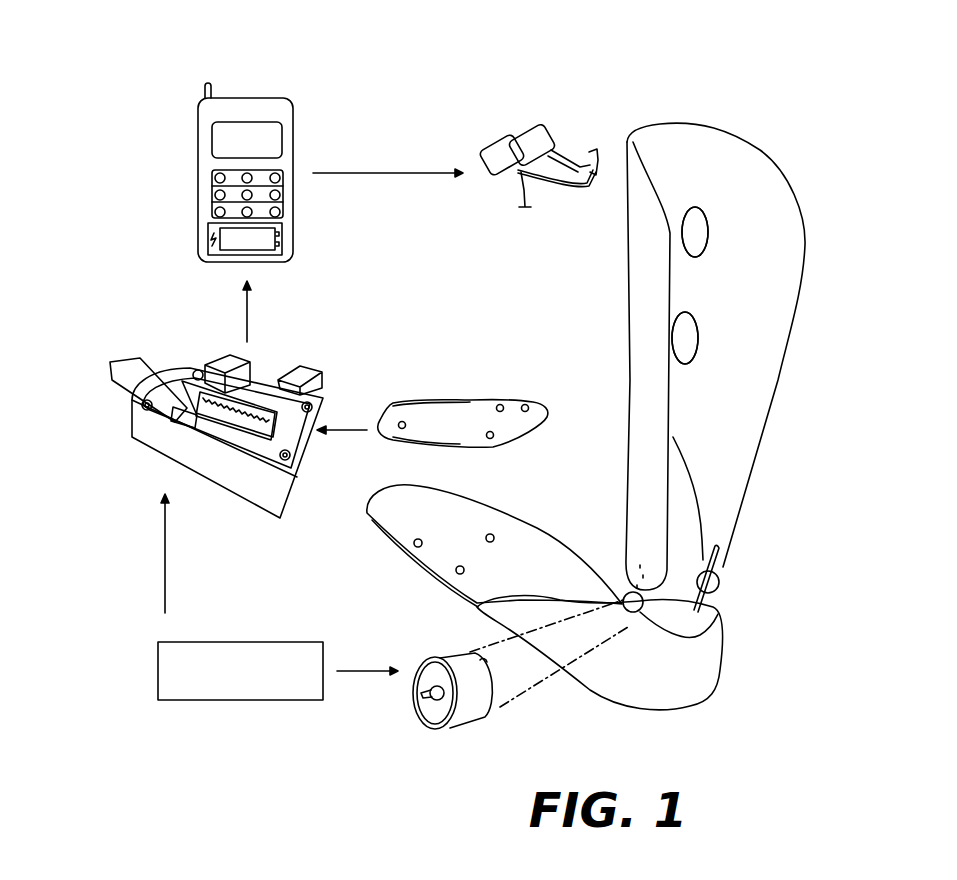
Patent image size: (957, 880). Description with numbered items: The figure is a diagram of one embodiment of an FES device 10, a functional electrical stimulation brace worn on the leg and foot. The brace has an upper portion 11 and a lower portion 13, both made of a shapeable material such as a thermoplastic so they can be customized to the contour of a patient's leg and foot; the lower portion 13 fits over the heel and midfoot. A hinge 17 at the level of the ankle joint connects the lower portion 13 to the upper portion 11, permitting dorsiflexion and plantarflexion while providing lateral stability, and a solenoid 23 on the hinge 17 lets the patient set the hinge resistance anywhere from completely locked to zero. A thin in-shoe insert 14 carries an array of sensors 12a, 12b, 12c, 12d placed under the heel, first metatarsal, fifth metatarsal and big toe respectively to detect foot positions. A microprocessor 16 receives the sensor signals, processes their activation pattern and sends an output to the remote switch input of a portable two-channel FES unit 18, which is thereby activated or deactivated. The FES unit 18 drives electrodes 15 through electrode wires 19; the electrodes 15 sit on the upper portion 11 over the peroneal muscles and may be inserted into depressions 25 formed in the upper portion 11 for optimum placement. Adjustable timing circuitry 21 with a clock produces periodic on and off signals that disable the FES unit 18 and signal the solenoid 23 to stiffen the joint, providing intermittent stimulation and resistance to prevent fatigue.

The FES device 10 is at (866, 144).
The upper portion 11 is at (780, 217).
The sensor 12a is at (402, 425).
The sensor 12b is at (502, 407).
The sensor 12c is at (488, 433).
The switch 12d is at (527, 406).
The lower portion 13 is at (678, 693).
The insert 14 is at (430, 418).
The electrodes 15 is at (502, 150).
The microprocessor 16 is at (178, 370).
The hinge 17 is at (625, 590).
The FES unit 18 is at (285, 160).
The electrode wires 19 is at (567, 168).
The adjustable timing circuitry 21 is at (245, 688).
The solenoid 23 is at (433, 715).
The depressions 25 is at (703, 238).